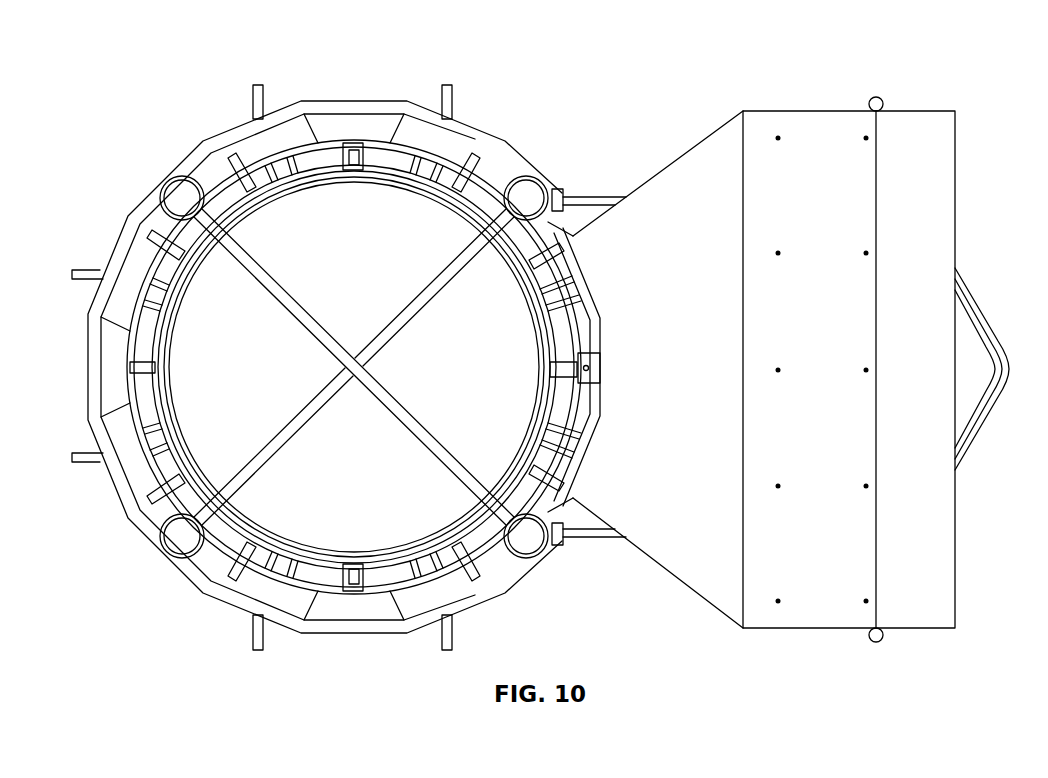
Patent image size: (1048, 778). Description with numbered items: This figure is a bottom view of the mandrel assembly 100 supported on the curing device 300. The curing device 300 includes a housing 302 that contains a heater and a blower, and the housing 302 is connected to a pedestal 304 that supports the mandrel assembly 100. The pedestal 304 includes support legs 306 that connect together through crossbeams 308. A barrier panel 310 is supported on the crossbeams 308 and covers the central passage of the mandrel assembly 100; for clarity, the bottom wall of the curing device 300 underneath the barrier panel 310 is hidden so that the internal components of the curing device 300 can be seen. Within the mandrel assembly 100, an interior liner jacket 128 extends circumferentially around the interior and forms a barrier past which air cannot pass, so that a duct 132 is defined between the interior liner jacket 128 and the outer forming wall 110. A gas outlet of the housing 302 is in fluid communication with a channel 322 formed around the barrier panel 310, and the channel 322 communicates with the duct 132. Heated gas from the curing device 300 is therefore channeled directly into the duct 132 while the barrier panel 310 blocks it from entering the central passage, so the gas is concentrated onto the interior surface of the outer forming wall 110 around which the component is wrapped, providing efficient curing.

The mandrel assembly 100 is at (366, 180).
The outer forming wall 110 is at (328, 147).
The interior liner jacket 128 is at (148, 237).
The duct 132 is at (230, 168).
The curing device 300 is at (687, 103).
The housing 302 is at (791, 137).
The pedestal 304 is at (522, 190).
The support legs 306 is at (182, 190).
The crossbeams 308 is at (327, 147).
The barrier panel 310 is at (310, 505).
The channel 322 is at (378, 598).